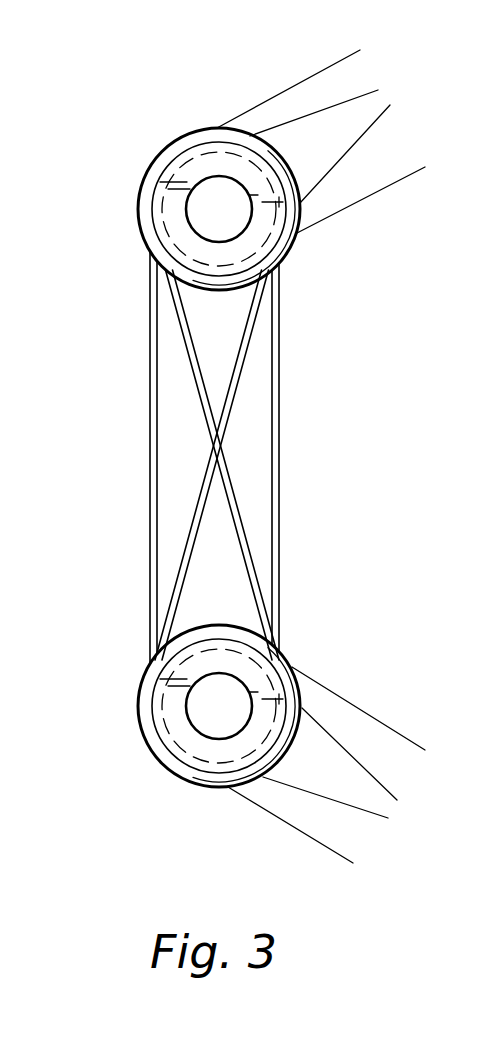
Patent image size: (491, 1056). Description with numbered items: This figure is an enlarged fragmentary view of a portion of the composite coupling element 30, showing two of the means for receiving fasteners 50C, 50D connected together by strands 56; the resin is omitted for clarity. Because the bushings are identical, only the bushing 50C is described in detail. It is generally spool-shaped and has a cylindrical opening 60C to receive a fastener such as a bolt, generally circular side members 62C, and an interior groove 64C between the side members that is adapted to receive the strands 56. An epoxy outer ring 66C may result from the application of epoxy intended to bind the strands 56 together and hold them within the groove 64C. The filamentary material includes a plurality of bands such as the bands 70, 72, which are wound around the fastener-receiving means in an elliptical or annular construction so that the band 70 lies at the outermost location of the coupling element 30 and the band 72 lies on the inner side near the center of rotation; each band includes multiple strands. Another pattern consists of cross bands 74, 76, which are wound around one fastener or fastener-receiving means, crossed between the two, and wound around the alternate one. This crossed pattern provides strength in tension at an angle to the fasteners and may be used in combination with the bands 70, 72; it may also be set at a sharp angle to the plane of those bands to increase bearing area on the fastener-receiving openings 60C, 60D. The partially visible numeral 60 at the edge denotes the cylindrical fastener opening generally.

The composite coupling element 30 is at (405, 303).
The means for receiving fasteners 50C is at (172, 790).
The means for receiving fasteners 50D is at (196, 108).
The strands 56 is at (318, 533).
The shaft 60 is at (481, 803).
The cylindrical opening 60C is at (197, 710).
The cylindrical opening 60D is at (200, 205).
The circular side members 62C is at (273, 680).
The interior groove 64C is at (288, 670).
The epoxy outer ring 66C is at (252, 678).
The band 70 is at (333, 64).
The band 72 is at (358, 206).
The cross band 74 is at (205, 393).
The cross band 76 is at (235, 408).